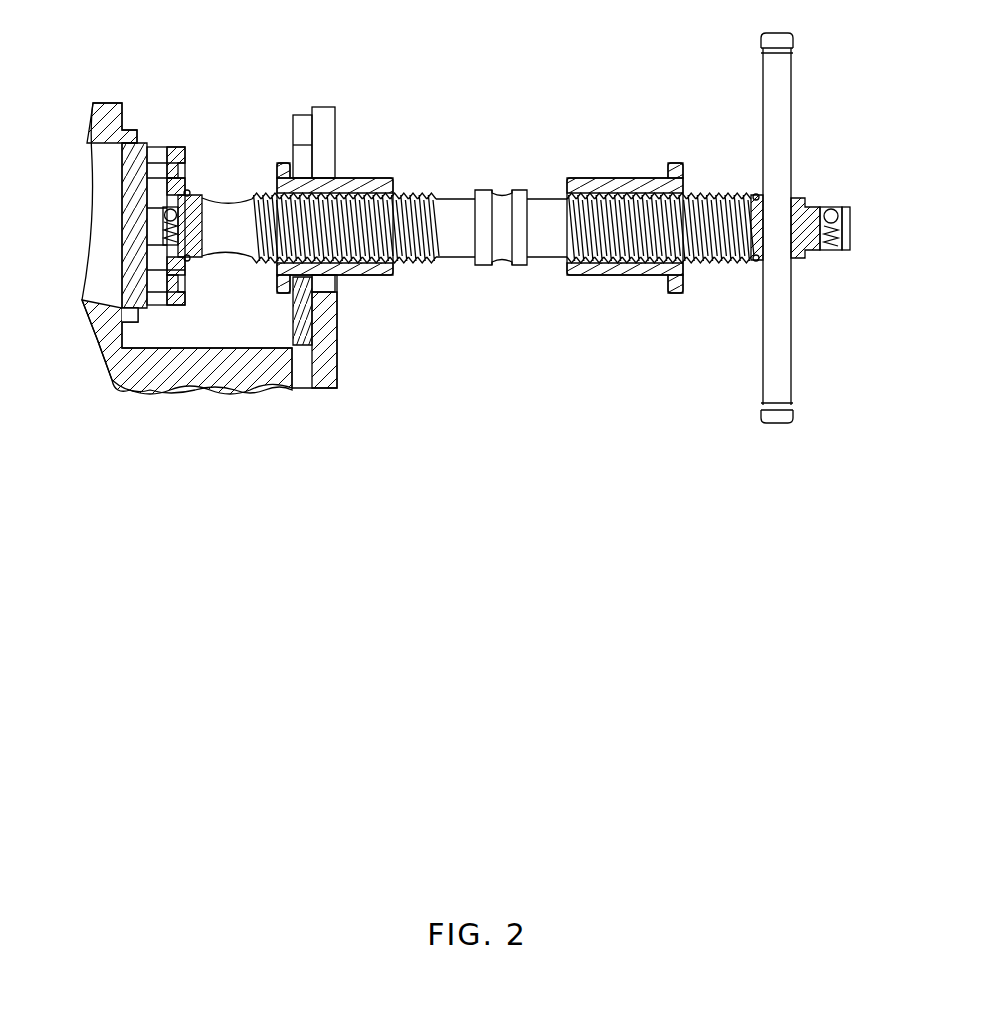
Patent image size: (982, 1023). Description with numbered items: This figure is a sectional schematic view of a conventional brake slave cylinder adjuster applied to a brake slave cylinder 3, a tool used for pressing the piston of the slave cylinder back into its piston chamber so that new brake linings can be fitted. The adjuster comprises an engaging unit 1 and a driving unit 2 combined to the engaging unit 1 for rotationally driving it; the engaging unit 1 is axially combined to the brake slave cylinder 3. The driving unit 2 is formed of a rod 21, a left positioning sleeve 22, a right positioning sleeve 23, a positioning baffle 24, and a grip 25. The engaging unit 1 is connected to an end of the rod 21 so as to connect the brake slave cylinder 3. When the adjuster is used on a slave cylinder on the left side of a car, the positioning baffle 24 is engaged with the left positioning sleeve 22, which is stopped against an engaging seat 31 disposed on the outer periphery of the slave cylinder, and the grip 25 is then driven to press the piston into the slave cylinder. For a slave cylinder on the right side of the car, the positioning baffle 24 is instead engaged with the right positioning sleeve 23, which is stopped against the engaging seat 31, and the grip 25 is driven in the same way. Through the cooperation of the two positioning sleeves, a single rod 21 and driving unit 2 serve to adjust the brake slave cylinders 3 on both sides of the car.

The engaging unit 1 is at (165, 118).
The driving unit 2 is at (502, 115).
The brake slave cylinder 3 is at (102, 120).
The rod 21 is at (799, 207).
The left positioning sleeve 22 is at (373, 275).
The right positioning sleeve 23 is at (610, 273).
The positioning baffle 24 is at (287, 310).
The grip 25 is at (768, 358).
The engaging seat 31 is at (307, 373).